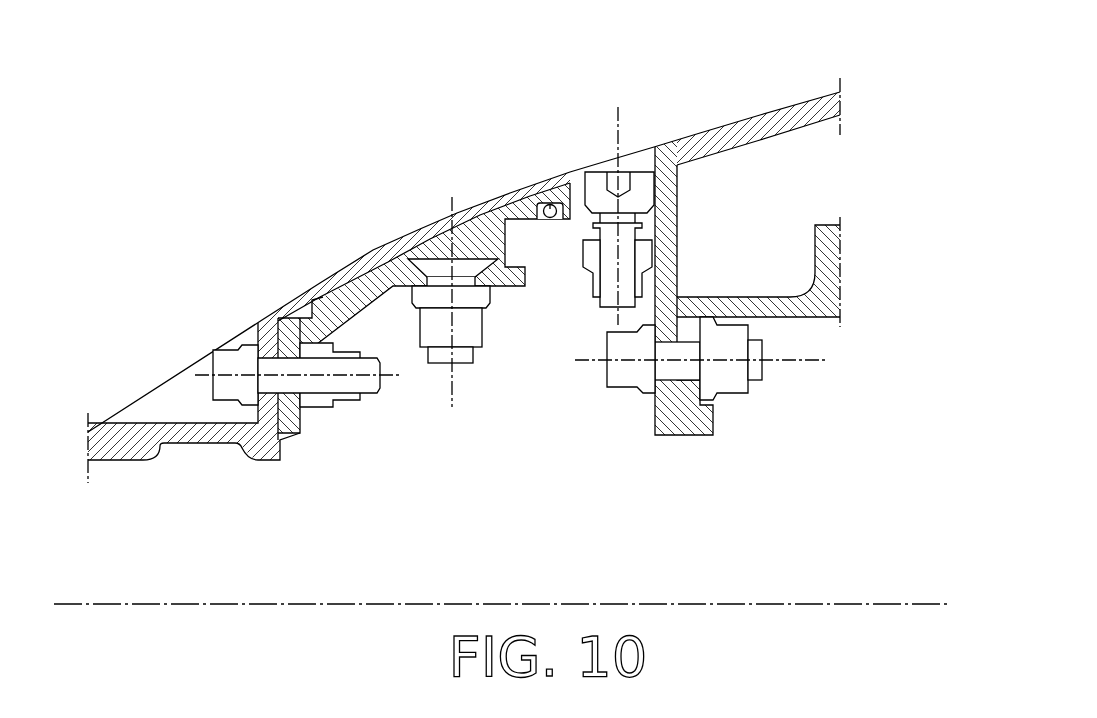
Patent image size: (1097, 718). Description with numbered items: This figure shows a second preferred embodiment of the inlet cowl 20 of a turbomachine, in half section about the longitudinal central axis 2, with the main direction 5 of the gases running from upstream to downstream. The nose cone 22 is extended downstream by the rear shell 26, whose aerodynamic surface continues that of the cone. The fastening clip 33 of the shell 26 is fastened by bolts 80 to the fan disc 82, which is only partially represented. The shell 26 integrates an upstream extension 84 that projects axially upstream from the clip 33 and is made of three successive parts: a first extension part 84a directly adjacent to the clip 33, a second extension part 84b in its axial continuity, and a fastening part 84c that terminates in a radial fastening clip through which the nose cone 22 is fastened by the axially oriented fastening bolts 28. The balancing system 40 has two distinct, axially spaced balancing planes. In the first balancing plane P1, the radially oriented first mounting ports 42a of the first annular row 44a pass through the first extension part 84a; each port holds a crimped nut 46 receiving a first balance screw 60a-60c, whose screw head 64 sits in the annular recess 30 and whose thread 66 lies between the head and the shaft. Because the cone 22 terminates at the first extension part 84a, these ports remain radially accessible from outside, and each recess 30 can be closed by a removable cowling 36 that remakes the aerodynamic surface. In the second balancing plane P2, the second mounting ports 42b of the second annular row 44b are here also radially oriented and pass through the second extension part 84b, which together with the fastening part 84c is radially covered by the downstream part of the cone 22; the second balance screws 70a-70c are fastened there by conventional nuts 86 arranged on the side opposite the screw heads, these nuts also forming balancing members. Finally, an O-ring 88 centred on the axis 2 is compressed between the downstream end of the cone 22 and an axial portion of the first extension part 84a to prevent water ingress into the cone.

The longitudinal central axis 2 is at (943, 603).
The main direction of gases 5 is at (925, 455).
The inlet cowl 20 is at (243, 158).
The nose cone 22 is at (157, 380).
The rear shell 26 is at (704, 126).
The fastening bolts 28 is at (233, 362).
The annular recess 30 is at (631, 157).
The fastening clip 33 is at (667, 197).
The removable cowling 36 is at (597, 162).
The balancing system 40 is at (402, 330).
The first mounting ports 42a is at (627, 237).
The second mounting ports 42b is at (438, 283).
The first annular row 44a is at (613, 463).
The second annular row 44b is at (425, 463).
The crimped nut 46 is at (592, 251).
The first balance screws 60a-60c is at (640, 303).
The screw head 64 is at (637, 187).
The thread 66 is at (660, 227).
The second balance screws 70a-70c is at (463, 368).
The bolts 80 is at (647, 384).
The fan disc 82 is at (727, 307).
The upstream extension 84 is at (340, 283).
The first extension part 84a is at (546, 204).
The second extension part 84b is at (352, 290).
The fastening part 84c is at (292, 432).
The nuts 86 is at (472, 327).
The O-ring 88 is at (546, 202).
The first balancing plane P1 is at (617, 108).
The second balancing plane P2 is at (451, 198).